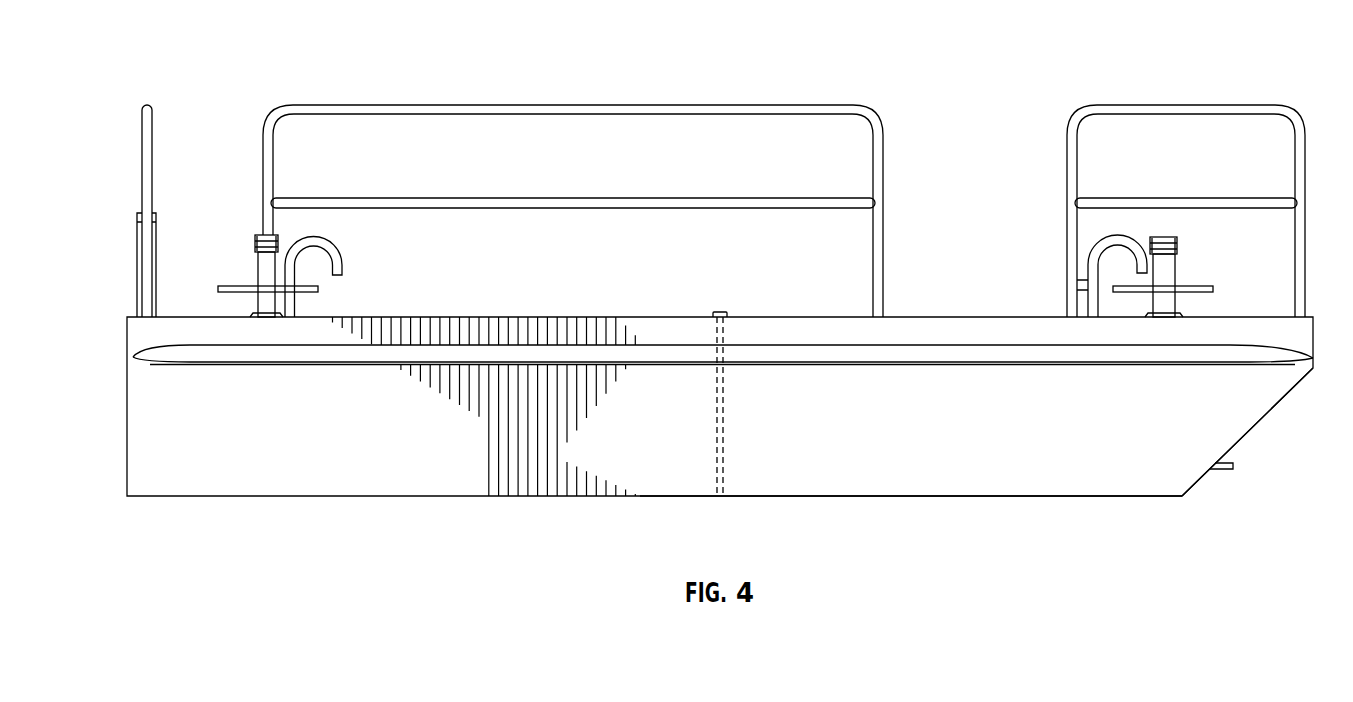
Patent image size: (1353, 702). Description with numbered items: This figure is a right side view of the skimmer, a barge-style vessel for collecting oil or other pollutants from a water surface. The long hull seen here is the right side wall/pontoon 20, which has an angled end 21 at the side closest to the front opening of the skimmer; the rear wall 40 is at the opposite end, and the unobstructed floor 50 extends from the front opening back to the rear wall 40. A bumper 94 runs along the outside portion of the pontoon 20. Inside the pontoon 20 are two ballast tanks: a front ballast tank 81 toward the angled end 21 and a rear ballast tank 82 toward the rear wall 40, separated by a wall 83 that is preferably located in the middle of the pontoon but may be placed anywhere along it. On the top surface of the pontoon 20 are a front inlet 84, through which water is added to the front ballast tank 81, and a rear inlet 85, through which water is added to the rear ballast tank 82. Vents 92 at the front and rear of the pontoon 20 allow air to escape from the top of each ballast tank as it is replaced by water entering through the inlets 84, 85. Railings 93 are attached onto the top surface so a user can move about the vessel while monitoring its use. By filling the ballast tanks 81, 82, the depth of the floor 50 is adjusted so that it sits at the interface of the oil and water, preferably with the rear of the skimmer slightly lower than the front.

The right side wall/pontoon 20 is at (883, 428).
The angled end of side wall/pontoon 21 is at (1264, 420).
The rear wall 40 is at (127, 428).
The floor 50 is at (1234, 469).
The front ballast tank 81 is at (994, 472).
The rear ballast tank 82 is at (385, 475).
The wall 83 is at (718, 418).
The front inlet 84 is at (1167, 275).
The rear inlet 85 is at (262, 278).
The vent 92 is at (339, 253).
The railing 93 is at (150, 124).
The bumper 94 is at (285, 355).